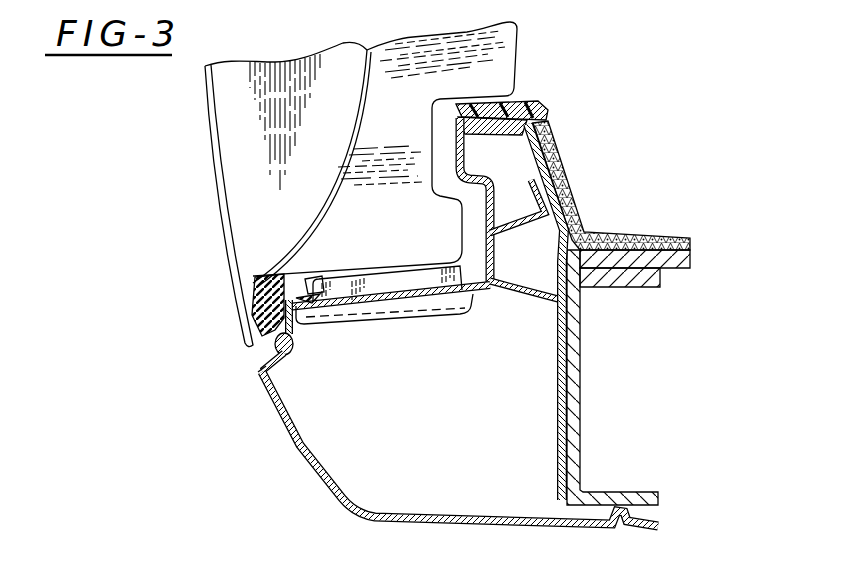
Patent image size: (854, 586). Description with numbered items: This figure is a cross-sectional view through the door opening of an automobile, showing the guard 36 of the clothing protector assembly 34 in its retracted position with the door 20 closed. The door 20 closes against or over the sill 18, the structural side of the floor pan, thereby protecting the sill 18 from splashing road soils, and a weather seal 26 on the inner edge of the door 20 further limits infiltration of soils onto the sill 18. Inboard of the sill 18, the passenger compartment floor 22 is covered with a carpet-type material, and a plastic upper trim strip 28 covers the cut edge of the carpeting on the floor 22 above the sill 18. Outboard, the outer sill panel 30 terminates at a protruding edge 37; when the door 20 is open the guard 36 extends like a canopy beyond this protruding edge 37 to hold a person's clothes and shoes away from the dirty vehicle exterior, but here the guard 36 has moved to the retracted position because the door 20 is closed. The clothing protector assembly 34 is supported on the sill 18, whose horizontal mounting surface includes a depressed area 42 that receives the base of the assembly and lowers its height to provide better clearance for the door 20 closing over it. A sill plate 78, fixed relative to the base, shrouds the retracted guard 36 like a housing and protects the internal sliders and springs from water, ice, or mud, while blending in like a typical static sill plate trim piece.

The sill 18 is at (468, 288).
The door 20 is at (207, 161).
The floor 22 is at (654, 240).
The weather seal 26 is at (297, 362).
The upper trim strip 28 is at (531, 106).
The outer sill panel 30 is at (282, 430).
The clothing protector assembly 34 is at (364, 240).
The guard 36 is at (318, 266).
The protruding edge 37 is at (257, 370).
The depressed area 42 is at (452, 316).
The sill plate 78 is at (407, 272).